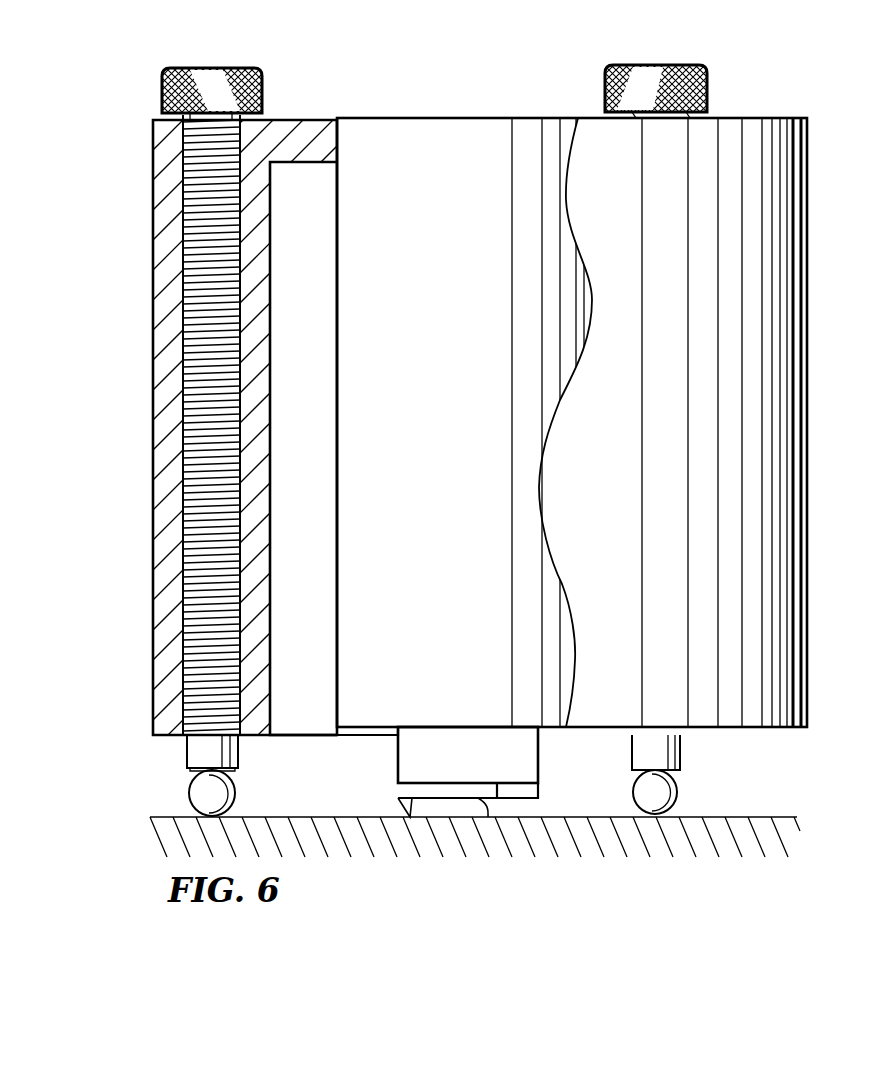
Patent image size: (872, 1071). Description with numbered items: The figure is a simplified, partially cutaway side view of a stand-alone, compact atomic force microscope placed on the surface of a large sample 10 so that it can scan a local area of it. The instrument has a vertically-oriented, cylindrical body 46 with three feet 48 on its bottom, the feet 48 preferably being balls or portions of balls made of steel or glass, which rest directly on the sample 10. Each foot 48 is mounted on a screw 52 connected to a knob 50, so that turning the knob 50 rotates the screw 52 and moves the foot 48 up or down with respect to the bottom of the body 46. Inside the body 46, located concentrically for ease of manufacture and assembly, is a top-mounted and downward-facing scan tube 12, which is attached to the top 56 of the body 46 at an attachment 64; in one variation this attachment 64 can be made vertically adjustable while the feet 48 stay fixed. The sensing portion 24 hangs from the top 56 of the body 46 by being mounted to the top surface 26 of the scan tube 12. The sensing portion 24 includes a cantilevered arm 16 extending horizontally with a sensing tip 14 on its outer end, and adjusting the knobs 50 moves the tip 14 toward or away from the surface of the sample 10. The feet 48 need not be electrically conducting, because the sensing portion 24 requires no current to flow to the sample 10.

The sample 10 is at (628, 835).
The scan tube 12 is at (478, 386).
The sensing tip 14 is at (404, 806).
The cantilevered arm 16 is at (488, 817).
The sensing portion 24 is at (386, 779).
The top surface 26 is at (375, 733).
The cylindrical body 46 is at (773, 183).
The feet 48 is at (198, 790).
The knobs 50 is at (162, 95).
The screws 52 is at (243, 425).
The top 56 is at (302, 140).
The attachment 64 is at (340, 150).